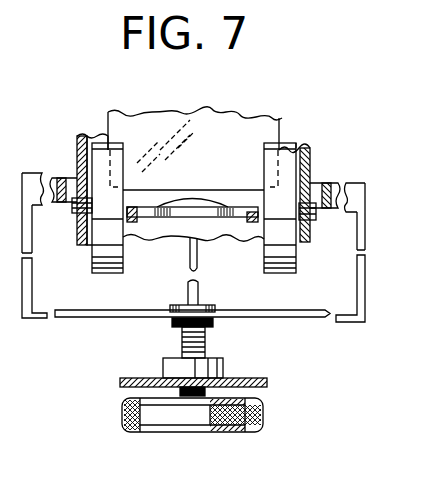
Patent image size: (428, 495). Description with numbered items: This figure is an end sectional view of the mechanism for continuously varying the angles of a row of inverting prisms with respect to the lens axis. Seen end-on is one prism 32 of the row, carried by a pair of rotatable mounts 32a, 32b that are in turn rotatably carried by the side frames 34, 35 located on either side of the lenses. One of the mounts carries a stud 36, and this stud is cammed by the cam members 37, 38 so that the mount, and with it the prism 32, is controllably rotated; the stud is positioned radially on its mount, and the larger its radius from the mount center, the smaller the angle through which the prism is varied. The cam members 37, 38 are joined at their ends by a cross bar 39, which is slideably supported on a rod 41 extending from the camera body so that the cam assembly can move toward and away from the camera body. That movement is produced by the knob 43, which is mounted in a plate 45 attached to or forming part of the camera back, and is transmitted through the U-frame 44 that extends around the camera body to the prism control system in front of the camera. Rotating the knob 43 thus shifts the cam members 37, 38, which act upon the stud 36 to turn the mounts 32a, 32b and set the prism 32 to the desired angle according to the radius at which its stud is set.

The prism 32 is at (250, 115).
The rotatable mount 32a is at (108, 268).
The rotatable mount 32b is at (285, 268).
The side frame 34 is at (79, 142).
The side frame 35 is at (312, 158).
The stud 36 is at (63, 208).
The cam member 37 is at (59, 178).
The cam member 38 is at (327, 210).
The cross bar 39 is at (321, 187).
The rod 41 is at (205, 248).
The knob 43 is at (216, 432).
The U-frame 44 is at (122, 316).
The plate 45 is at (256, 378).